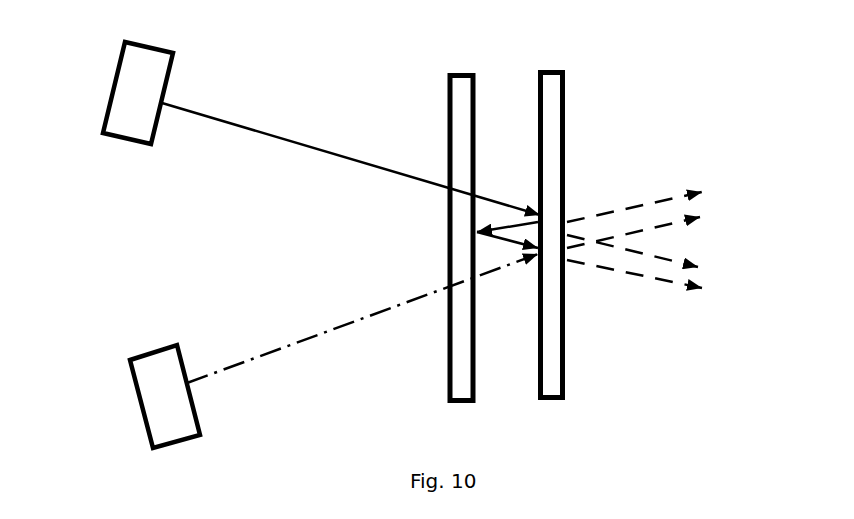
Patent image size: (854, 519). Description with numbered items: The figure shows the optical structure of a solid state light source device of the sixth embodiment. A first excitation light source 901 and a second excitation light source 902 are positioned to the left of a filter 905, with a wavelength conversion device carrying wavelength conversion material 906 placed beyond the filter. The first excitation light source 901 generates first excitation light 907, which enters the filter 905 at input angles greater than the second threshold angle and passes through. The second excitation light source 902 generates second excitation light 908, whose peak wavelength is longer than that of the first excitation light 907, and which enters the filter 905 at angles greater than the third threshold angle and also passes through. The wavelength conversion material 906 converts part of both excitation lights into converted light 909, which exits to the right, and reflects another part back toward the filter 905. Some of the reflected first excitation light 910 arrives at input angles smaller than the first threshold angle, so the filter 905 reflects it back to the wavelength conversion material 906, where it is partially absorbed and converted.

The first excitation light source 901 is at (146, 72).
The second excitation light source 902 is at (170, 419).
The filter 905 is at (462, 80).
The wavelength conversion material 906 is at (550, 78).
The first excitation light 907 is at (283, 137).
The second excitation light 908 is at (274, 355).
The converted light 909 is at (657, 200).
The reflected first excitation light 910 is at (525, 211).